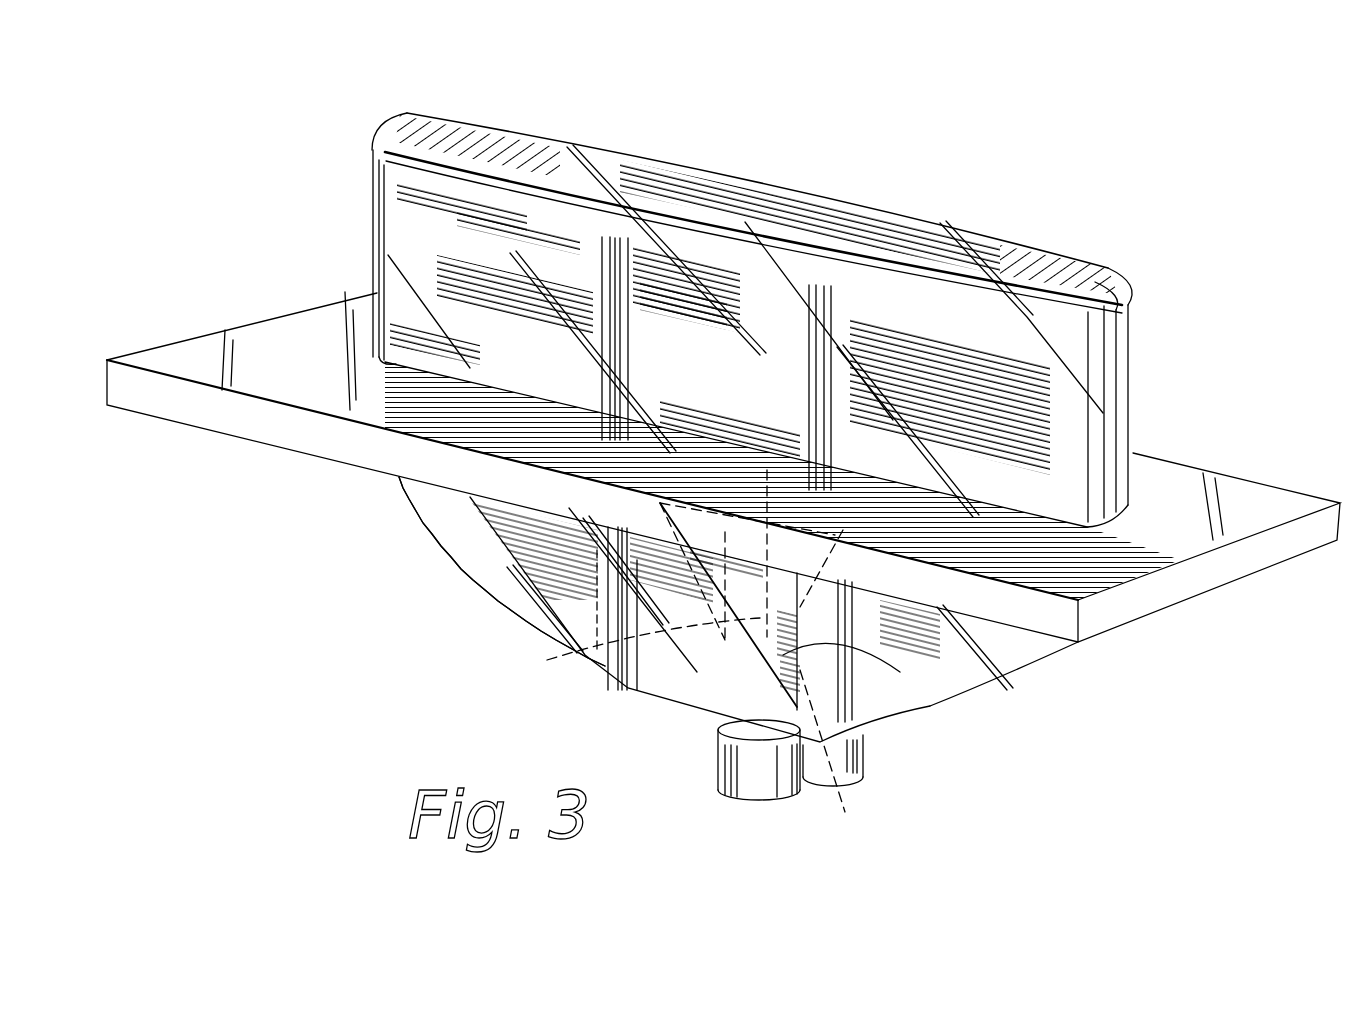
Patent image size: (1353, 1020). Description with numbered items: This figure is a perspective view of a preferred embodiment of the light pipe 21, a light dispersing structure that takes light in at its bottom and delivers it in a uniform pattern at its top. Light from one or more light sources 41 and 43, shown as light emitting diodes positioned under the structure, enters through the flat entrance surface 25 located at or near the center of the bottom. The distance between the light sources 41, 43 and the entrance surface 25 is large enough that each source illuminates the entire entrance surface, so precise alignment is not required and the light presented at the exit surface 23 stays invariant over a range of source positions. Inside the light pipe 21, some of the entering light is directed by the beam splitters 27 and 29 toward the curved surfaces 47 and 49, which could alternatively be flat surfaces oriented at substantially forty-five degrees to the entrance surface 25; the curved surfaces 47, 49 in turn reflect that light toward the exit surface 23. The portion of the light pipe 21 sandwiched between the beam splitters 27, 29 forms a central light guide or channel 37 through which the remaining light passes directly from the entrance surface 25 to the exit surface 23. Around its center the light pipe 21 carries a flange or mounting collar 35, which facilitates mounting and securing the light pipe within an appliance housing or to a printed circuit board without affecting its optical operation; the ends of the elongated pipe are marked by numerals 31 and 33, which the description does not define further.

The light pipe 21 is at (1182, 60).
The exit surface 23 is at (722, 200).
The entrance surface 25 is at (839, 765).
The beam splitter 27 is at (871, 671).
The beam splitter 29 is at (619, 659).
The first end of blade 31 is at (430, 250).
The second end of blade 33 is at (1140, 290).
The flange or mounting collar 35 is at (1276, 497).
The central light guide or channel 37 is at (780, 470).
The light source 41 is at (843, 750).
The light source 43 is at (735, 753).
The curved surface 47 is at (457, 527).
The curved surface 49 is at (1025, 650).